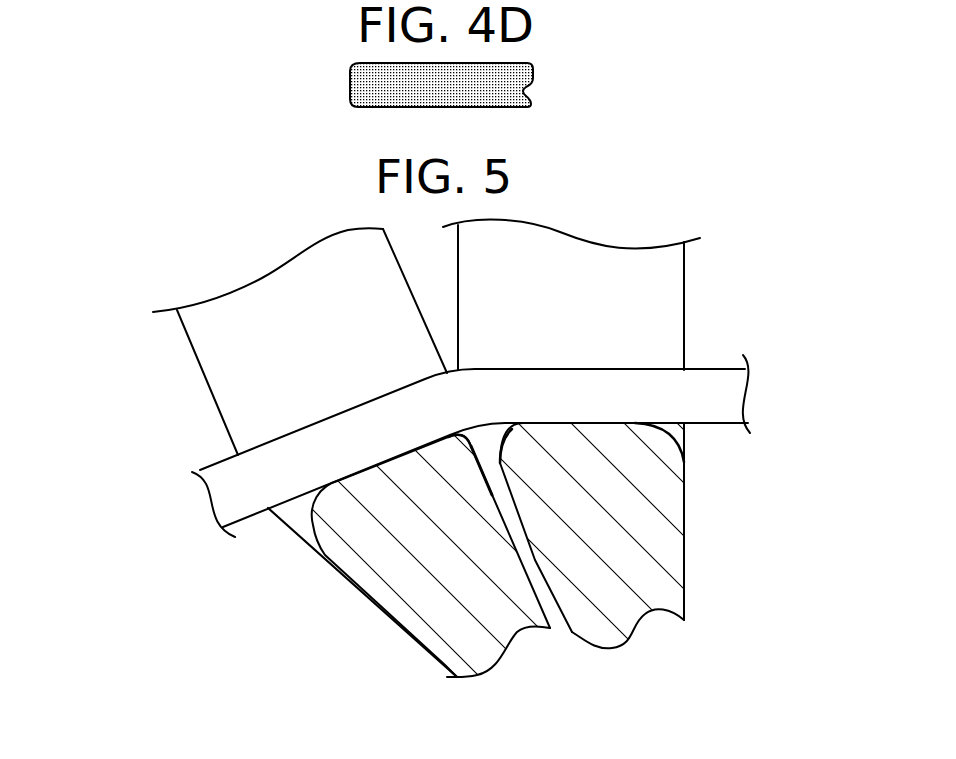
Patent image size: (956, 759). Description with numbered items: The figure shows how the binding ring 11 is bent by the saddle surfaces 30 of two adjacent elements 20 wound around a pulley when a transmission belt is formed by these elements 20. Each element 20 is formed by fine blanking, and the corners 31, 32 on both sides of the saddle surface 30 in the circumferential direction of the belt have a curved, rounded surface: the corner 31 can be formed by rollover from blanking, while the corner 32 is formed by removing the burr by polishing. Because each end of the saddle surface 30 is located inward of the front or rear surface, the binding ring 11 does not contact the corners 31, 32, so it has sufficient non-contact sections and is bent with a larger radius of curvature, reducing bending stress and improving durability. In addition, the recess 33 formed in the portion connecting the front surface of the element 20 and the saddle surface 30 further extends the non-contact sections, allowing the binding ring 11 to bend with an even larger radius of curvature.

The element 20 is at (157, 350).
The binding ring 11 is at (463, 392).
The saddle surface 30 is at (602, 422).
The corner 31 is at (313, 519).
The corner 32 is at (683, 432).
The recess 33 is at (322, 552).